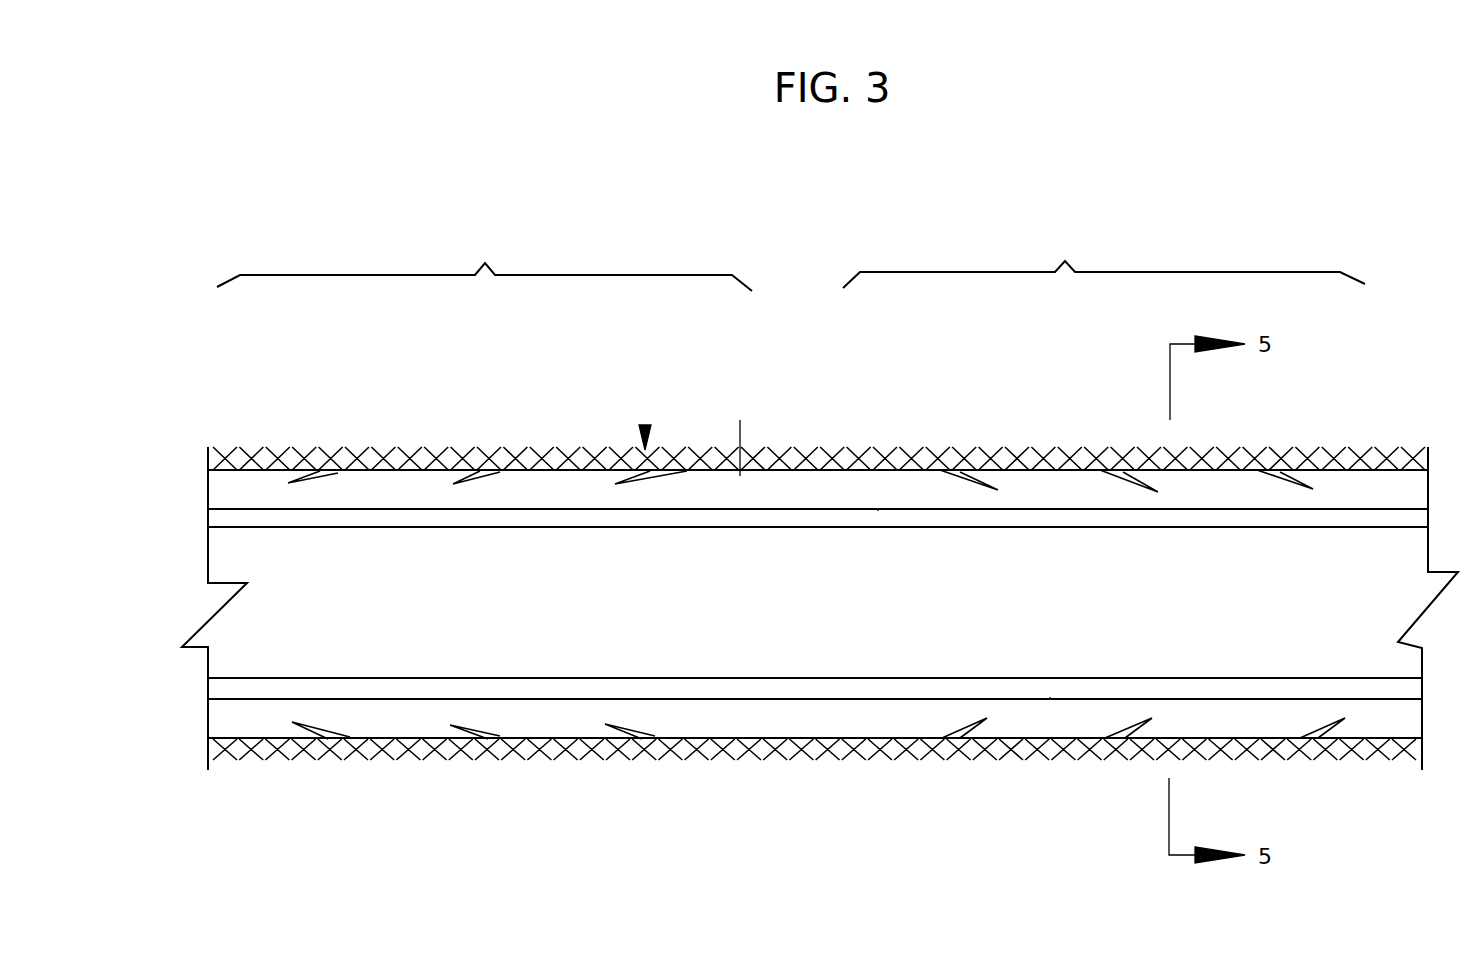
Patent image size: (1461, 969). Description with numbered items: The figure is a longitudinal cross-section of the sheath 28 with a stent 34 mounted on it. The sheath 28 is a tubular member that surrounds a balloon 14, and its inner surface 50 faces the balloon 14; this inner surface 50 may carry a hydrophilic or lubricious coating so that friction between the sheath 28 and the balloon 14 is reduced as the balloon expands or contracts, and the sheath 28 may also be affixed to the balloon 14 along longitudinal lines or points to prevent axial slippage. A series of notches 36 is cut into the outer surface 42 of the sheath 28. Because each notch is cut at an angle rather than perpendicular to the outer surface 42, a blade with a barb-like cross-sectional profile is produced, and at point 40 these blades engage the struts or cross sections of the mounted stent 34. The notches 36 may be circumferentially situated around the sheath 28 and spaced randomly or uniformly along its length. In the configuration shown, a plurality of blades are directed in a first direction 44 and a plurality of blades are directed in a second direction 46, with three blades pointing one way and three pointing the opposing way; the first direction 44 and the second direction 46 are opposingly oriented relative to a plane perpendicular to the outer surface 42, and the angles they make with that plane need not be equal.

The balloon 14 is at (365, 678).
The sheath 28 is at (1230, 480).
The stent 34 is at (1335, 447).
The notches 36 is at (332, 473).
The point 40 is at (645, 428).
The outer surface 42 is at (741, 422).
The first direction 44 is at (484, 264).
The second direction 46 is at (1104, 262).
The inner surface 50 is at (878, 510).